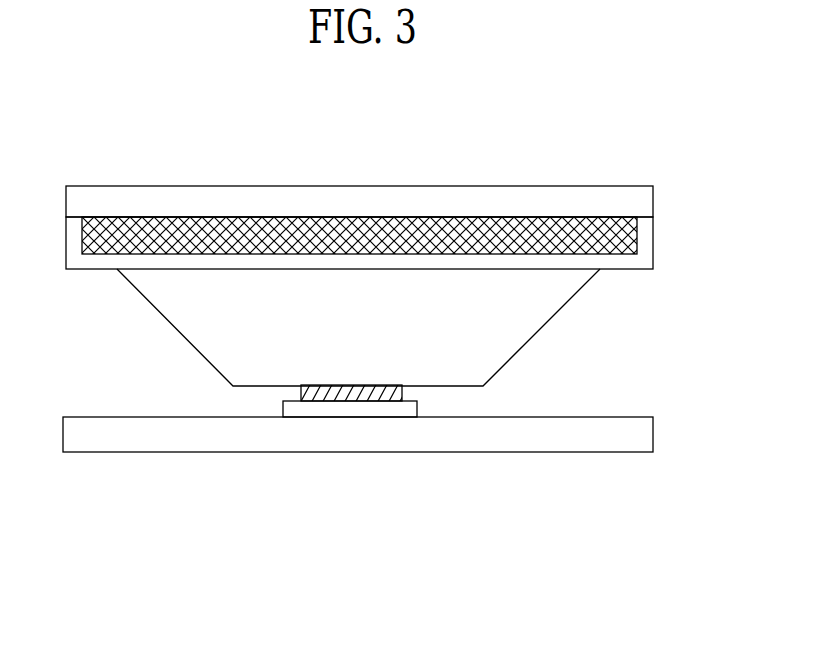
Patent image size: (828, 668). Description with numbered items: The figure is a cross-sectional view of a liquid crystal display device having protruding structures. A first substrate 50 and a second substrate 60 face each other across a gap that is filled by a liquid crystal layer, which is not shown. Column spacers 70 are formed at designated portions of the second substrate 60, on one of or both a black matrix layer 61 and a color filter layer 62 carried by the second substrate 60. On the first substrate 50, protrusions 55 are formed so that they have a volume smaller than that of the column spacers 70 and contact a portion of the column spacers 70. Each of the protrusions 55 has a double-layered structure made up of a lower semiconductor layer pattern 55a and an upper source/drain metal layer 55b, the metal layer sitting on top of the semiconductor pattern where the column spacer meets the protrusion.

The first substrate 50 is at (645, 433).
The protrusions 55 is at (351, 469).
The lower semiconductor layer pattern 55a is at (390, 410).
The upper source/drain metal layer 55b is at (319, 410).
The second substrate 60 is at (647, 201).
The black matrix layer 61 is at (637, 232).
The color filter layer 62 is at (647, 260).
The column spacers 70 is at (548, 305).